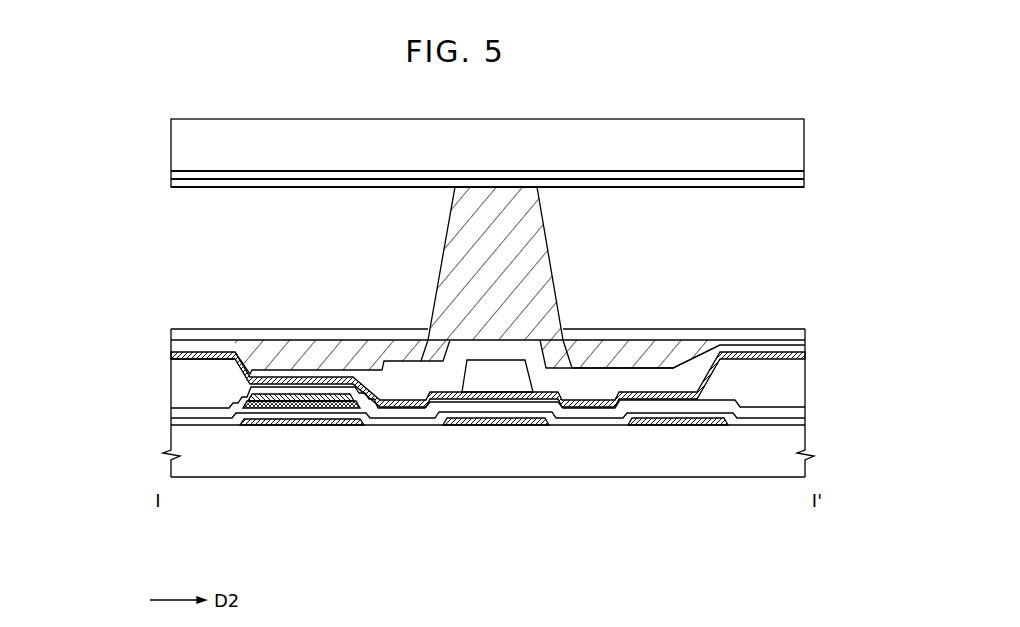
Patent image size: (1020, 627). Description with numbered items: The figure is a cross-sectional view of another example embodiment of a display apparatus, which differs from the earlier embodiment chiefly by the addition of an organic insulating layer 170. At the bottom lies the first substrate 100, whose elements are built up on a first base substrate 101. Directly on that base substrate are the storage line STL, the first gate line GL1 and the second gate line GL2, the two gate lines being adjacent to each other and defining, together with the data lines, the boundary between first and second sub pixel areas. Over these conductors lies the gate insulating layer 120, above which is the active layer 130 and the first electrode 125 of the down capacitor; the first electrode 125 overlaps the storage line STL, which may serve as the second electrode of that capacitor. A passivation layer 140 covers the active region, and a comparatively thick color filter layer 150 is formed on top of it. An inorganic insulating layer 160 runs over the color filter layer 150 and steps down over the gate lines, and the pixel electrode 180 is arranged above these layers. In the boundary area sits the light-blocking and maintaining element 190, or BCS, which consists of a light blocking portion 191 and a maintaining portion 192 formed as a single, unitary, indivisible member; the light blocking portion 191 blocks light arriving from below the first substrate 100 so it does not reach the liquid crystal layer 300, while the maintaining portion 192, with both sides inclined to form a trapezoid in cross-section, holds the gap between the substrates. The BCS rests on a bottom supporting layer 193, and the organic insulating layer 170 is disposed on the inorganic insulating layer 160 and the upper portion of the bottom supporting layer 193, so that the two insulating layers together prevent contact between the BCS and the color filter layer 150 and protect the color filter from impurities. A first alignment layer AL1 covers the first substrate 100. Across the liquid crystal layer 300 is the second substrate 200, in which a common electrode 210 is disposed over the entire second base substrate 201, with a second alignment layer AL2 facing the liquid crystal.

The second substrate 200 is at (424, 165).
The second base substrate 201 is at (171, 137).
The common electrode 210 is at (171, 173).
The second alignment layer AL2 is at (451, 199).
The liquid crystal layer 300 is at (164, 195).
The first substrate 100 is at (429, 364).
The first base substrate 101 is at (177, 468).
The storage line STL is at (295, 421).
The first gate line GL1 is at (517, 424).
The second gate line GL2 is at (683, 421).
The gate insulating layer 120 is at (171, 421).
The first electrode 125 is at (320, 397).
The active layer 130 is at (255, 405).
The passivation layer 140 is at (171, 412).
The color filter layer 150 is at (177, 387).
The inorganic insulating layer 160 is at (171, 356).
The organic insulating layer 170 is at (433, 380).
The pixel electrode 180 is at (171, 345).
The bottom supporting layer 193 is at (477, 378).
The light-blocking and maintaining element (BCS) 190 is at (570, 386).
The light blocking portion 191 is at (627, 353).
The maintaining portion 192 is at (505, 262).
The first alignment layer AL1 is at (450, 322).